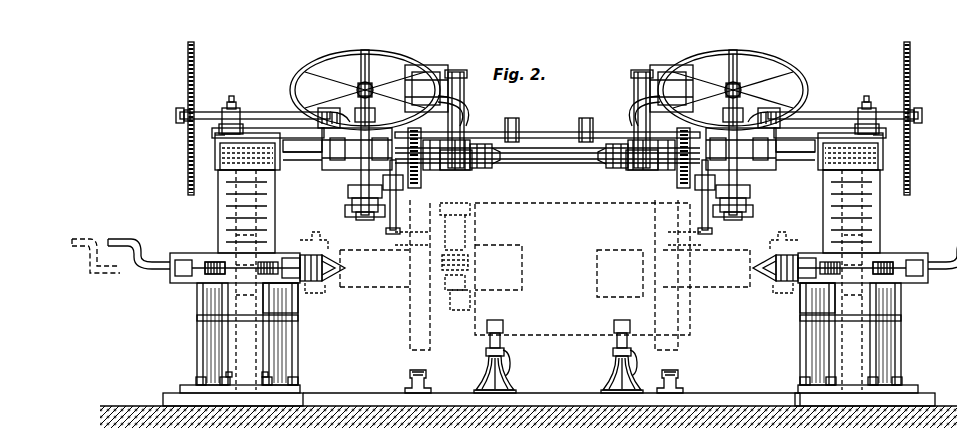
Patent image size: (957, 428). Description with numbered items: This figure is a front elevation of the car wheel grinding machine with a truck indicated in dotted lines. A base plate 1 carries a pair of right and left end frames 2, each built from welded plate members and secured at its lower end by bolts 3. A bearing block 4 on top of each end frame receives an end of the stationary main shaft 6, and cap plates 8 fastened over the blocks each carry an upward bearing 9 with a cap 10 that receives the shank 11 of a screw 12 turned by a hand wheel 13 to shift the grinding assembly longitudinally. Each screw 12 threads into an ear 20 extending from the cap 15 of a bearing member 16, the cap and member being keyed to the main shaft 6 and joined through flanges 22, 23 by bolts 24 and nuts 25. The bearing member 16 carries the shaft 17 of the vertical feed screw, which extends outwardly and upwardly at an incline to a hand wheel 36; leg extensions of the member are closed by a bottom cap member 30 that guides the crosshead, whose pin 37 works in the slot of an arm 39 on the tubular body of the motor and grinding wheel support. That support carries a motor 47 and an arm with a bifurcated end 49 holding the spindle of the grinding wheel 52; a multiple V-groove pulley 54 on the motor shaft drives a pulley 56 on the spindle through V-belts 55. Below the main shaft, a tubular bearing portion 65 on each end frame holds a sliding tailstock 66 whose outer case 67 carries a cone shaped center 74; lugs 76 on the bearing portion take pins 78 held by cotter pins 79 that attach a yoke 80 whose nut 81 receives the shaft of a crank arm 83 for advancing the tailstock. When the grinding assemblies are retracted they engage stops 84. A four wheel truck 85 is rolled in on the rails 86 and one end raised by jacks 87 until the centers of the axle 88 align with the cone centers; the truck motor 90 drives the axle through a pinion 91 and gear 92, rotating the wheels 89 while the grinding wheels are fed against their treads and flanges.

The base plate 1 is at (553, 376).
The end frames 2 is at (283, 345).
The bolts 3 is at (263, 378).
The bearing block 4 is at (215, 172).
The stationary main shaft 6 is at (555, 163).
The cap plates 8 is at (215, 135).
The bearing 9 is at (219, 126).
The cap 10 is at (231, 108).
The shank 11 is at (205, 112).
The screws 12 is at (300, 118).
The hand wheels 13 is at (188, 58).
The cap 15 is at (312, 138).
The bearing member 16 is at (280, 180).
The shaft 17 is at (355, 170).
The ear 20 is at (362, 92).
The flange 22 is at (770, 110).
The flange 23 is at (318, 170).
The bolts 24 is at (328, 110).
The nuts 25 is at (345, 210).
The bottom cap member 30 is at (395, 235).
The hand wheel 36 is at (366, 50).
The pin 37 is at (708, 210).
The arm 39 is at (393, 205).
The motor 47 is at (420, 65).
The bifurcated end 49 is at (625, 168).
The grinding wheel 52 is at (428, 178).
The multiple V-groove pulley 54 is at (456, 75).
The V-belts 55 is at (466, 108).
The multiple V-groove pulley 56 is at (470, 140).
The tubular bearing portion 65 is at (200, 290).
The tailstock 66 is at (312, 240).
The outer case 67 is at (310, 293).
The cone shaped center 74 is at (345, 268).
The lugs 76 is at (208, 275).
The pins 78 is at (185, 255).
The cotter pins 79 is at (178, 258).
The yoke 80 is at (165, 268).
The nut 81 is at (148, 262).
The crank arm 83 is at (90, 240).
The stops 84 is at (579, 130).
The four wheel truck 85 is at (350, 290).
The rails 86 is at (410, 380).
The jacks 87 is at (610, 350).
The axle 88 is at (548, 260).
The wheels 89 is at (410, 332).
The motor 90 is at (480, 340).
The pinion 91 is at (470, 292).
The gear 92 is at (470, 215).